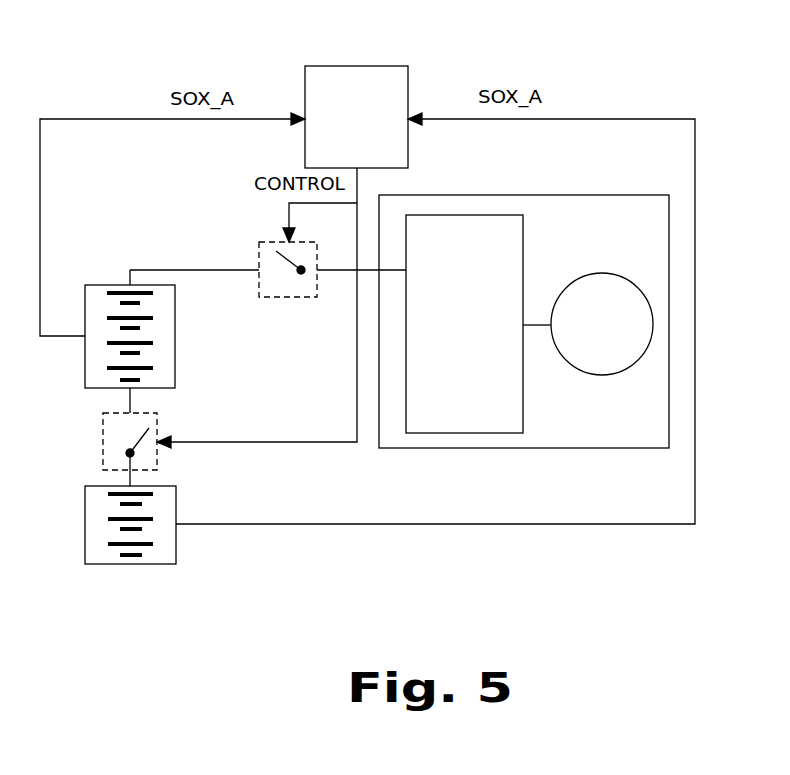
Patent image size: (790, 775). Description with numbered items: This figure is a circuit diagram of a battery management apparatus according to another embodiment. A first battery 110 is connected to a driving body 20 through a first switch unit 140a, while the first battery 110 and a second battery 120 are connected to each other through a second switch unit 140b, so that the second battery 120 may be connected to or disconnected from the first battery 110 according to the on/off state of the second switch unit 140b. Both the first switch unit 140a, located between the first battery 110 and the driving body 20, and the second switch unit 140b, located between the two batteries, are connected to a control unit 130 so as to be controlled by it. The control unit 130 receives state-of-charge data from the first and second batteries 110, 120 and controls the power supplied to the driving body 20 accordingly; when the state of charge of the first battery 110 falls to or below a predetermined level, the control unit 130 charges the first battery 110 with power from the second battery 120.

The control unit 130 is at (408, 90).
The first battery 110 is at (97, 285).
The second battery 120 is at (176, 551).
The first switch unit 140a is at (275, 298).
The second switch unit 140b is at (157, 455).
The driving body 20 is at (598, 376).